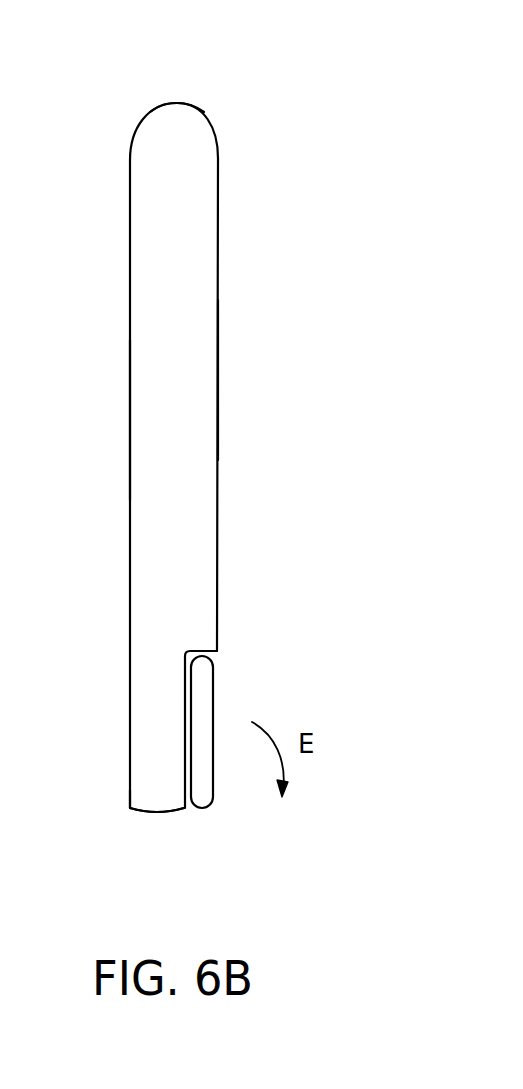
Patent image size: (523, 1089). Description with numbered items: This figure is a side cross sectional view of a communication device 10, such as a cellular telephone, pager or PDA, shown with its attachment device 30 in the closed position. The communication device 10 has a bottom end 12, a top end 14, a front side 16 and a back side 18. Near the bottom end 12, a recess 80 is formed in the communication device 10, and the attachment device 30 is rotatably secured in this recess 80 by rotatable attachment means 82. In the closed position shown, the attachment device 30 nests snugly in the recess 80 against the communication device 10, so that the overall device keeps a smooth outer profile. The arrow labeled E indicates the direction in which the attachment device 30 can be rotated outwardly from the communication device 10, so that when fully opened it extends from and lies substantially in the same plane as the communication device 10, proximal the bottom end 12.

The communication device 10 is at (187, 182).
The top end 14 is at (178, 103).
The back side 18 is at (219, 378).
The front side 16 is at (130, 418).
The recess 80 is at (217, 650).
The rotatable attachment means 82 is at (184, 810).
The attachment device 30 is at (204, 685).
The bottom end 12 is at (139, 816).